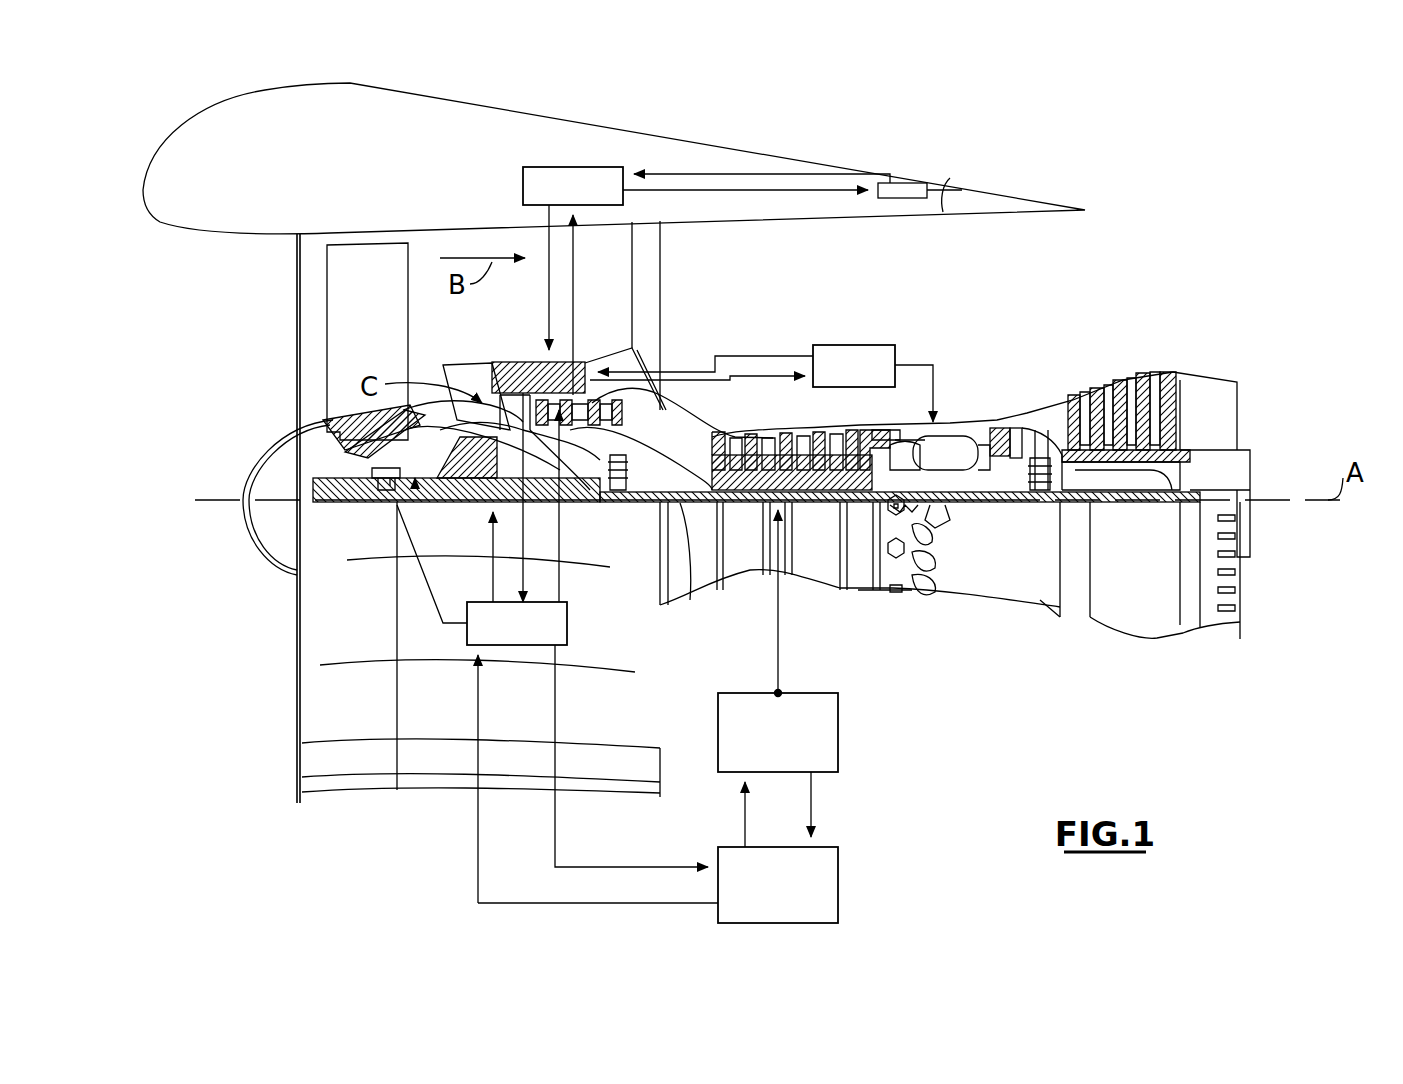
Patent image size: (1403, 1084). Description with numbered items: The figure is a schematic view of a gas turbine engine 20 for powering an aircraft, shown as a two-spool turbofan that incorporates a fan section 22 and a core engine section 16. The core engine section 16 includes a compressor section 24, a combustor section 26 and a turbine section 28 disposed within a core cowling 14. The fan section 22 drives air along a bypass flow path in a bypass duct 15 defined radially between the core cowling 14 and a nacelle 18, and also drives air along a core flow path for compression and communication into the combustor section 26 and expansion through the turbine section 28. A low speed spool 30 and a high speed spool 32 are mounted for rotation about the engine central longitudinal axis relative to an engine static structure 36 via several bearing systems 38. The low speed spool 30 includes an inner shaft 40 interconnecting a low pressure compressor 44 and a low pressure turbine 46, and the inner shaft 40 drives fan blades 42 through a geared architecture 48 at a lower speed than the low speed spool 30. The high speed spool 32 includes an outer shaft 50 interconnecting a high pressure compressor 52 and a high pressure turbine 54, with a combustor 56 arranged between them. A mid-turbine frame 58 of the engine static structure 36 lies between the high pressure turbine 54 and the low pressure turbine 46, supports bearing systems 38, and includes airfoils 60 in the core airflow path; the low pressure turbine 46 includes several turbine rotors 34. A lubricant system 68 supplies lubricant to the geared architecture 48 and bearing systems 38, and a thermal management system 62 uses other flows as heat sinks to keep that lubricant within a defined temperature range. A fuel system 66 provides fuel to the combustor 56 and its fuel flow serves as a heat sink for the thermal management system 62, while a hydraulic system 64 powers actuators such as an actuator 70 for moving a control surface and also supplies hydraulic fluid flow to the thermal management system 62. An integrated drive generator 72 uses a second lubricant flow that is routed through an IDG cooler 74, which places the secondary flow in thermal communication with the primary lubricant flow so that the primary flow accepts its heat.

The core cowling 14 is at (495, 362).
The bypass duct 15 is at (690, 255).
The core engine section 16 is at (518, 285).
The nacelle 18 is at (612, 132).
The gas turbine engine 20 is at (1125, 150).
The fan section 22 is at (507, 192).
The compressor section 24 is at (518, 334).
The combustor section 26 is at (917, 334).
The turbine section 28 is at (1190, 334).
The low speed spool 30 is at (827, 515).
The high speed spool 32 is at (862, 442).
The turbine rotors 34 is at (1147, 462).
The engine static structure 36 is at (858, 596).
The bearing systems 38 is at (377, 488).
The inner shaft 40 is at (690, 560).
The fan blades 42 is at (382, 348).
The low pressure compressor 44 is at (667, 402).
The low pressure turbine 46 is at (1127, 400).
The geared architecture 48 is at (483, 493).
The outer shaft 50 is at (943, 490).
The high pressure compressor 52 is at (788, 440).
The high pressure turbine 54 is at (1003, 428).
The combustor 56 is at (936, 440).
The mid-turbine frame 58 is at (1046, 412).
The airfoils 60 is at (1062, 450).
The thermal management system 62 is at (548, 302).
The hydraulic system 64 is at (558, 200).
The fuel system 66 is at (840, 377).
The lubricant system 68 is at (502, 637).
The actuator 70 is at (908, 183).
The integrated drive generator 72 is at (828, 726).
The IDG cooler 74 is at (840, 886).